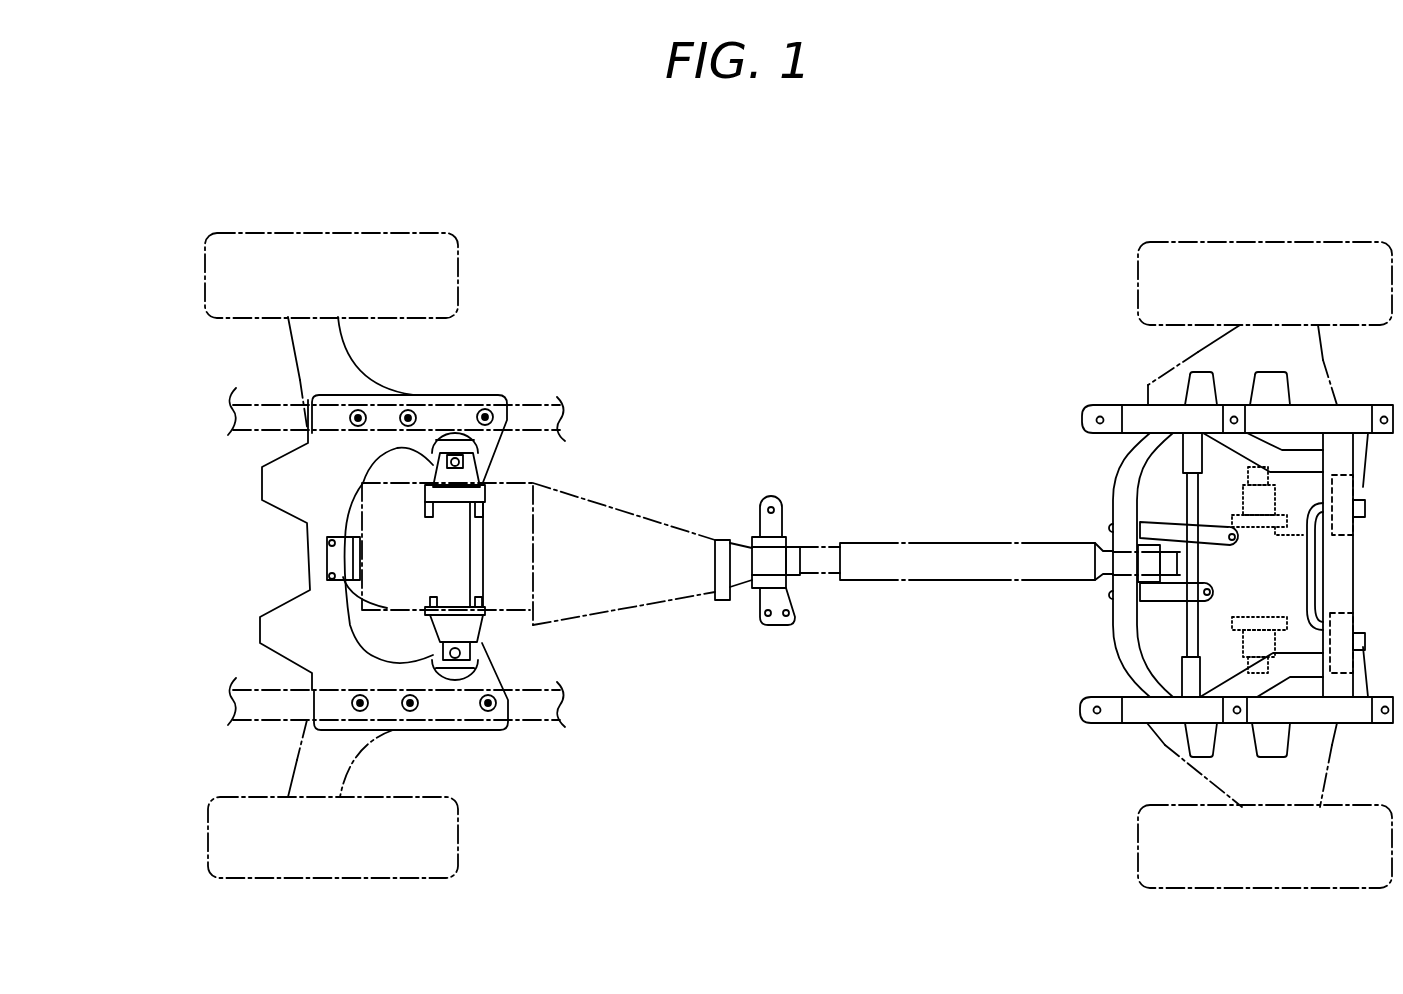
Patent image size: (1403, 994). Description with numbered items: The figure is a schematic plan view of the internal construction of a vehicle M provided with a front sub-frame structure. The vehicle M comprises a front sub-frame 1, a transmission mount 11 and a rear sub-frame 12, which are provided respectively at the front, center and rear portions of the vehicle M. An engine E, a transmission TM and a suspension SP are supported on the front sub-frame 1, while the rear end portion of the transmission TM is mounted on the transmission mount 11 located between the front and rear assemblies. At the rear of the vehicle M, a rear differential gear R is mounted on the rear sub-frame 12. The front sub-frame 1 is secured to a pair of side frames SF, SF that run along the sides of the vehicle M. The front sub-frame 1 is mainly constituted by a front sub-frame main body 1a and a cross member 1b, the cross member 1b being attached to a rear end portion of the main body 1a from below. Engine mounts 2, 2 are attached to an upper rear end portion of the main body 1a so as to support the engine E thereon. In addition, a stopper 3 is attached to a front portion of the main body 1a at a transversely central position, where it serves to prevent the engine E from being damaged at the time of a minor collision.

The front sub-frame 1 is at (488, 394).
The front sub-frame main body 1a is at (278, 641).
The cross member 1b is at (478, 545).
The engine mount 2 is at (478, 468).
The stopper 3 is at (333, 562).
The transmission mount 11 is at (782, 507).
The rear sub-frame 12 is at (1103, 487).
The vehicle M is at (837, 314).
The suspension SP is at (303, 343).
The side frame SF is at (252, 427).
The engine E is at (523, 577).
The transmission TM is at (637, 580).
The rear differential gear R is at (1242, 598).